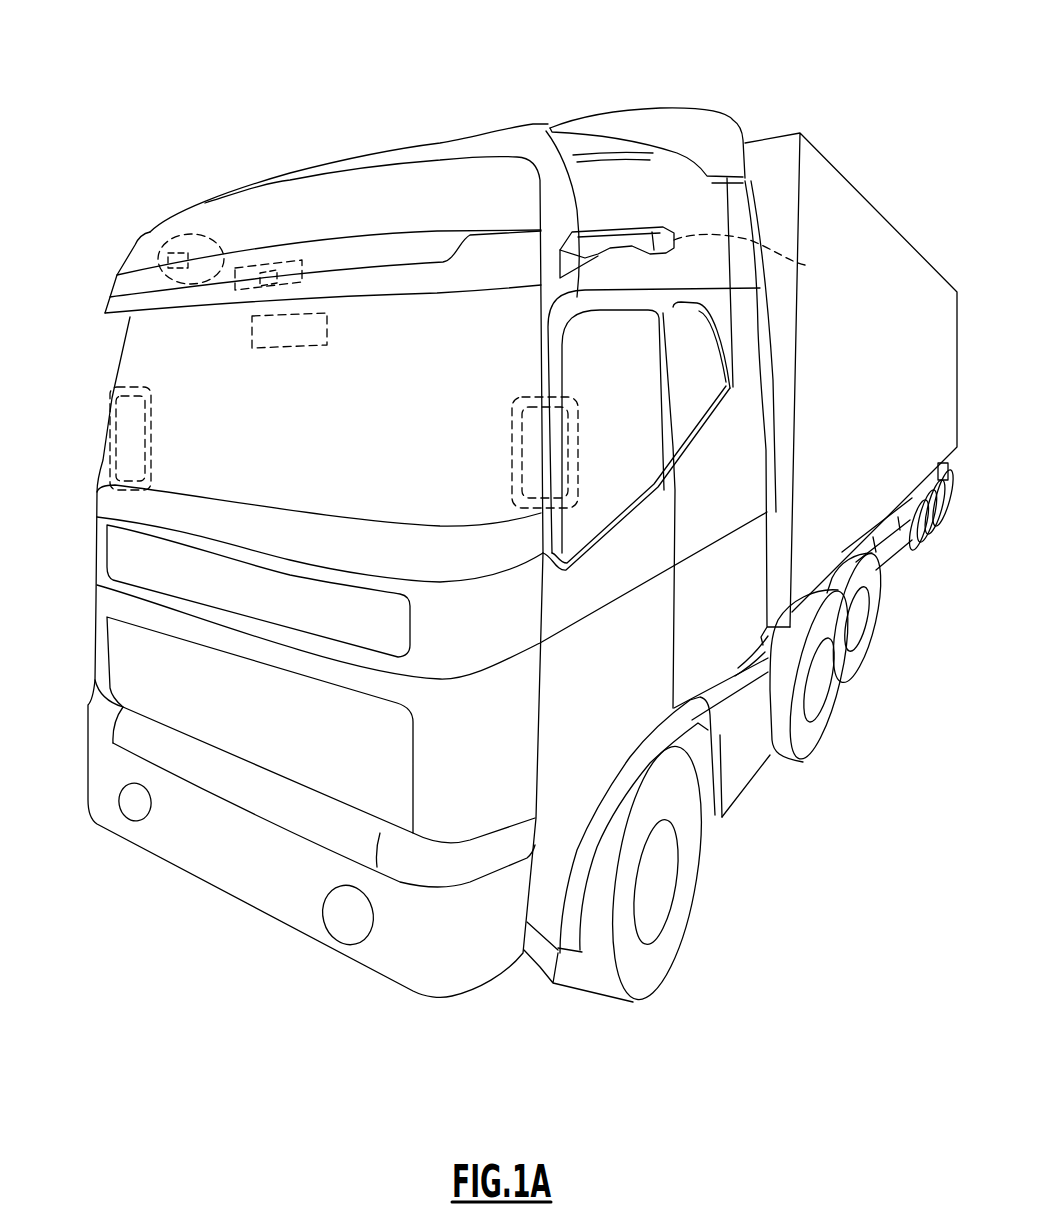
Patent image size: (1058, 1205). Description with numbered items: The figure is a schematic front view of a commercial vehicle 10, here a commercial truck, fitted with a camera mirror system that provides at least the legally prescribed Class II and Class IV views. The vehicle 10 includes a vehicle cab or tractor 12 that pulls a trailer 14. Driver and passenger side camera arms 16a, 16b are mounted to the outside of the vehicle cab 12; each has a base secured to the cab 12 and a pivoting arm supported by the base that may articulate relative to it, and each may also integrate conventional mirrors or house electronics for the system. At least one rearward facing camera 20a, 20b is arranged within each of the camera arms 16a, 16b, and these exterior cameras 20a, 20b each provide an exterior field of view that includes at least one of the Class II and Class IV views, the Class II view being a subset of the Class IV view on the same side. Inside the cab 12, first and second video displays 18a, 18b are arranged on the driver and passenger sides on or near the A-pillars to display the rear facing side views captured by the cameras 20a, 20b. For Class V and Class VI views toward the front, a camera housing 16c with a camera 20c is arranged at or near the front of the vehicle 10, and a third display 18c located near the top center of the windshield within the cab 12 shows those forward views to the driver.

The commercial vehicle 10 is at (884, 70).
The vehicle cab 12 is at (84, 555).
The trailer 14 is at (918, 293).
The driver side camera arm 16a is at (614, 240).
The passenger side camera arm 16b is at (180, 238).
The camera housing 16c is at (262, 273).
The first video display 18a is at (515, 438).
The second video display 18b is at (140, 424).
The third display 18c is at (327, 327).
The rearward facing camera 20a is at (805, 265).
The rearward facing camera 20b is at (168, 256).
The camera 20c is at (258, 283).